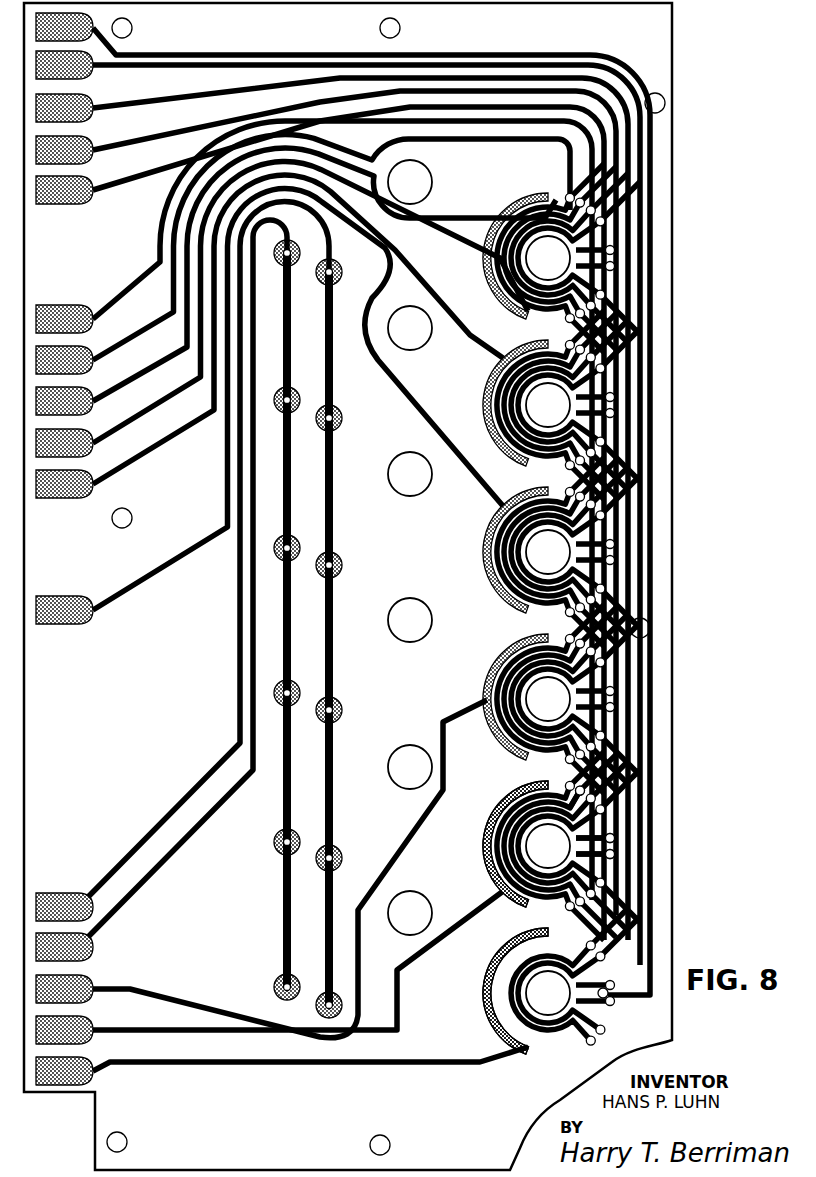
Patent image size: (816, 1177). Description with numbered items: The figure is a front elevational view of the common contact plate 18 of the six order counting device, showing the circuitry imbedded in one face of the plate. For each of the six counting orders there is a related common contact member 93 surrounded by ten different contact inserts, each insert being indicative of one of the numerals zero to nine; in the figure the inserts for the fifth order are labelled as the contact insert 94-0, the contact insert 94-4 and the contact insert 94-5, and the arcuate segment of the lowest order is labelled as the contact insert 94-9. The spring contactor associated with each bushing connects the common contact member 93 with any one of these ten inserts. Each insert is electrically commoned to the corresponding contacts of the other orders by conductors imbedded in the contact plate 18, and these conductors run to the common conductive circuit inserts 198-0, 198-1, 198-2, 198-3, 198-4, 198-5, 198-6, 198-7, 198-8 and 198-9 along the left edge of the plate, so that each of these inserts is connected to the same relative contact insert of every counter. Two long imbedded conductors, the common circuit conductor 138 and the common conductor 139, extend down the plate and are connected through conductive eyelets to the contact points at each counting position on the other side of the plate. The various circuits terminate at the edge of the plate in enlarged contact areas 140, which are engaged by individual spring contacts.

The contact plate 18 is at (673, 47).
The common conductive circuit insert "4" 198-4 is at (217, 53).
The common conductive circuit insert "5" 198-5 is at (108, 68).
The common conductive circuit insert "3" 198-3 is at (107, 108).
The common conductive circuit insert "6" 198-6 is at (99, 150).
The common conductive circuit insert "2" 198-2 is at (110, 178).
The common conductive circuit insert "7" 198-7 is at (118, 294).
The common conductive circuit insert "1" 198-1 is at (118, 338).
The common conductive circuit insert "8" 198-8 is at (145, 366).
The common conductive circuit insert "0" 198-0 is at (157, 398).
The common conductive circuit insert "9" 198-9 is at (116, 463).
The enlarged contact area 140 is at (57, 622).
The common circuit conductor 138 is at (279, 915).
The common conductor 139 is at (324, 889).
The common contact member 93 is at (500, 892).
The contact insert "9" 94-9 is at (546, 930).
The contact insert "0" 94-0 is at (585, 792).
The contact insert "4" 94-4 is at (616, 841).
The contact insert "5" 94-5 is at (616, 856).